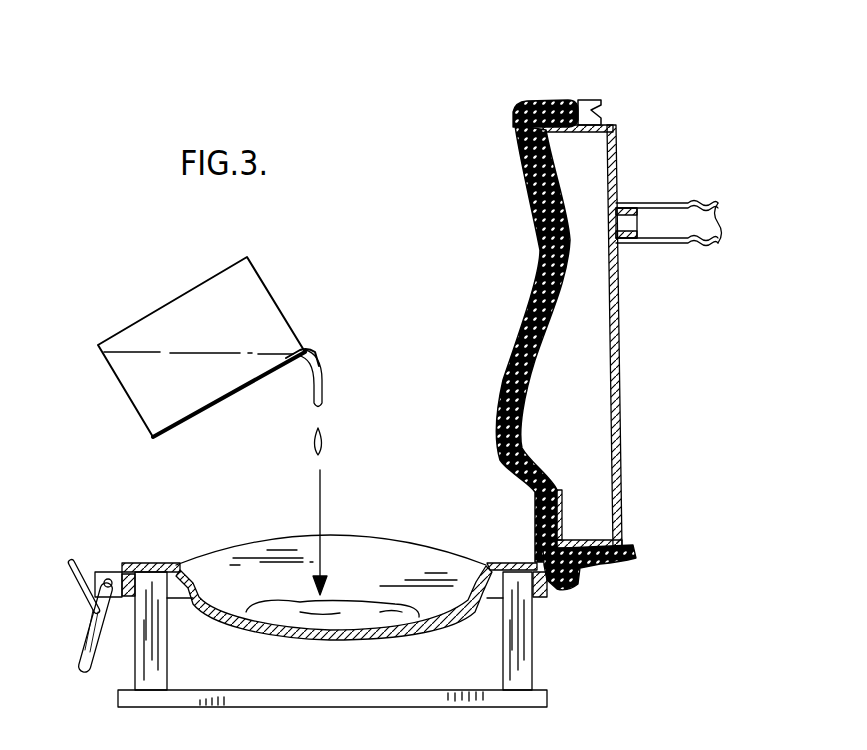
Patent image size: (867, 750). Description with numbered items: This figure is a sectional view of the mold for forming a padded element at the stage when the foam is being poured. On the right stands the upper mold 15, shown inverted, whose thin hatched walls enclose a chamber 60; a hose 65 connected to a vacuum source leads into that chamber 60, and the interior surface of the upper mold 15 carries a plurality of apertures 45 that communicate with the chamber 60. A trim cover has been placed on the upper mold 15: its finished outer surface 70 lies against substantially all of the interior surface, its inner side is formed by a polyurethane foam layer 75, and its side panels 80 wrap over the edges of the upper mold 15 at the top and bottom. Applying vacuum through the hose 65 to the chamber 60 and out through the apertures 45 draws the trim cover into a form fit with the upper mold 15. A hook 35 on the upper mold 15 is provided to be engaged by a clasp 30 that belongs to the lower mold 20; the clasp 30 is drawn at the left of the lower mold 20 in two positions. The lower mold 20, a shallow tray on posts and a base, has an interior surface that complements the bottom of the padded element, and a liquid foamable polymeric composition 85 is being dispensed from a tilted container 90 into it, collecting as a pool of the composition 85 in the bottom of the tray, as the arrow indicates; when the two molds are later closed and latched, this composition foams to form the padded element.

The upper mold 15 is at (618, 310).
The lower mold 20 is at (163, 565).
The clasp 30 is at (85, 640).
The hook 35 is at (597, 100).
The apertures 45 is at (521, 409).
The chamber 60 is at (604, 528).
The hose 65 is at (678, 216).
The outer surface 70 is at (558, 191).
The polyurethane foam layer 75 is at (524, 153).
The side panels 80 is at (547, 104).
The liquid foamable polymeric composition 85 is at (138, 382).
The container 90 is at (155, 310).